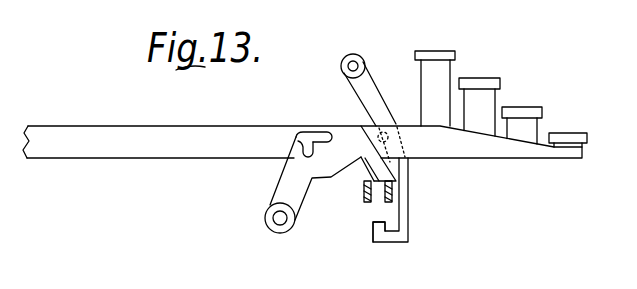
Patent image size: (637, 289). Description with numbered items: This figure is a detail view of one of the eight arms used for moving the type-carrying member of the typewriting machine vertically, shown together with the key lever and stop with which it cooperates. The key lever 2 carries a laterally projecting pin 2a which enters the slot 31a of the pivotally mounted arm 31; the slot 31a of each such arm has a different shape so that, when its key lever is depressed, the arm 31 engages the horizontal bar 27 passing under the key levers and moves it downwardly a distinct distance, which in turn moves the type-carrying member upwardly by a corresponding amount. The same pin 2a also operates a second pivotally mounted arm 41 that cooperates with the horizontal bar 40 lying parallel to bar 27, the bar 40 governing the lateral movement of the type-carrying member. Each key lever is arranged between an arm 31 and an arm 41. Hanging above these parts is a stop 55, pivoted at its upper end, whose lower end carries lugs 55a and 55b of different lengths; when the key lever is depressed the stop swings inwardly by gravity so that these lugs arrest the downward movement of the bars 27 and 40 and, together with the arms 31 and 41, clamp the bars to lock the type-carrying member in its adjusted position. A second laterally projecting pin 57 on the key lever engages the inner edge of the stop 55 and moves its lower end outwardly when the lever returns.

The key lever 2 is at (302, 142).
The laterally projecting pin 2a is at (330, 135).
The horizontal bar 27 is at (393, 193).
The pivotally mounted arm 31 is at (273, 200).
The slot 31a is at (293, 155).
The horizontal bar 40 is at (365, 194).
The pivotally mounted arm 41 is at (359, 166).
The stop 55 is at (368, 83).
The stop lug 55a is at (409, 240).
The stop lug 55b is at (373, 226).
The laterally projecting pin 57 is at (396, 122).